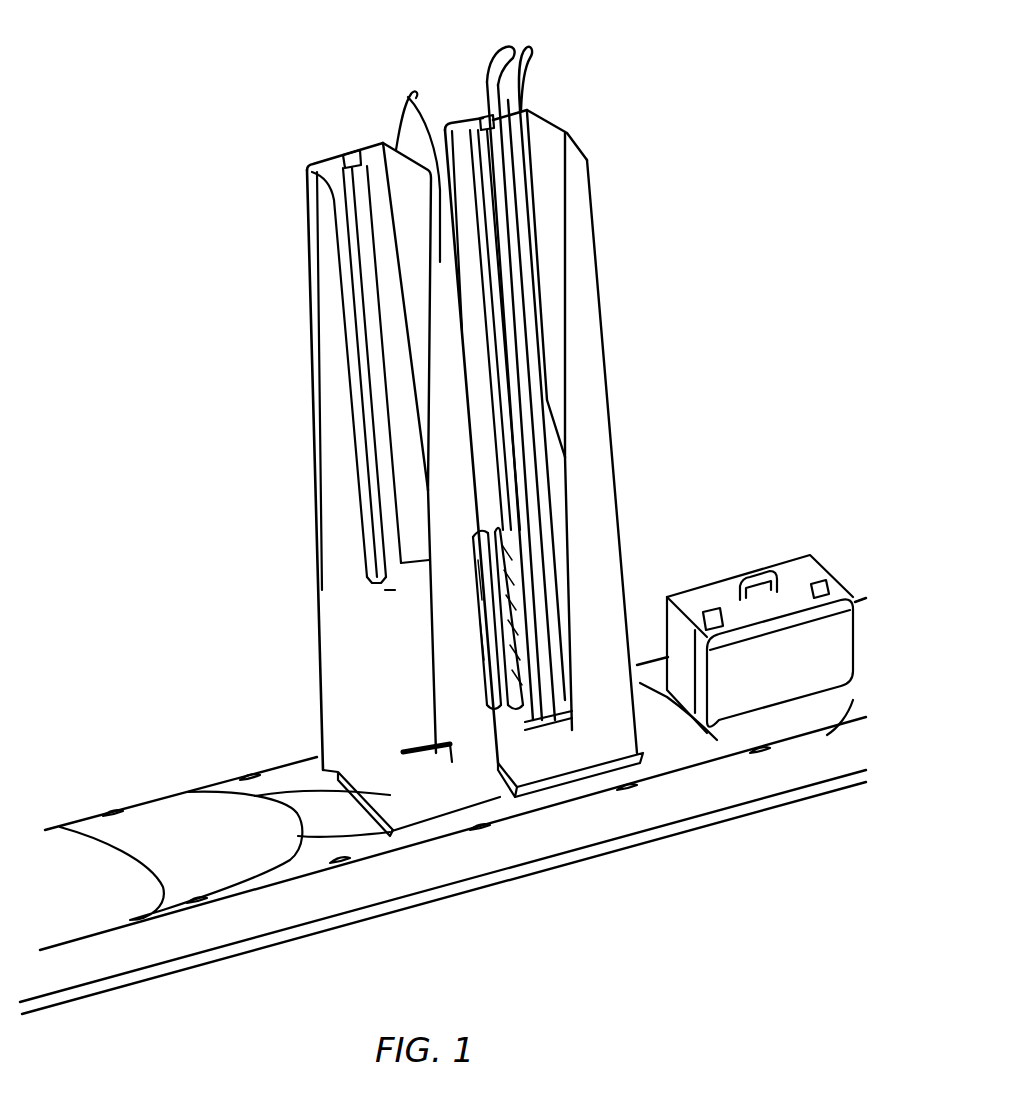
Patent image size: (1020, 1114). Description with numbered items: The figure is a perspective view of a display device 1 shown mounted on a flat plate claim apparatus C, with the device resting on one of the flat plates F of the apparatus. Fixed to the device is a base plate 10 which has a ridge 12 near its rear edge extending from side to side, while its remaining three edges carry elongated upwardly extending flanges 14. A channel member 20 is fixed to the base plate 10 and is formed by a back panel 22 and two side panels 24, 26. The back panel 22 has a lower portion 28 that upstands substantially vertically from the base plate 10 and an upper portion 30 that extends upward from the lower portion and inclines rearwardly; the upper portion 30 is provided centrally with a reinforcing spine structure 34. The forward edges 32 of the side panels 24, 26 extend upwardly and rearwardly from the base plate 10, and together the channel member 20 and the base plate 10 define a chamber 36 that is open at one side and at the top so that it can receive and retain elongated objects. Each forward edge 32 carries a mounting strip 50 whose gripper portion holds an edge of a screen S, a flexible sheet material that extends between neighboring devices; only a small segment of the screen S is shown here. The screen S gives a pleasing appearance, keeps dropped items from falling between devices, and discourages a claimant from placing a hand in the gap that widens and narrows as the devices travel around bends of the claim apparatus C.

The device 1 is at (252, 143).
The base plate 10 is at (300, 836).
The ridge 12 is at (407, 747).
The flanges 14 is at (343, 790).
The channel member 20 is at (473, 345).
The back panel 22 is at (313, 168).
The side panel 24 is at (312, 206).
The side panel 26 is at (407, 203).
The lower portion 28 is at (397, 638).
The upper portion 30 is at (360, 428).
The forward edges 32 is at (432, 270).
The reinforcing spine structure 34 is at (403, 171).
The chamber 36 is at (383, 608).
The mounting strip 50 is at (383, 543).
The screen S is at (504, 637).
The flat plate claim apparatus C is at (77, 775).
The flat plate F is at (173, 795).